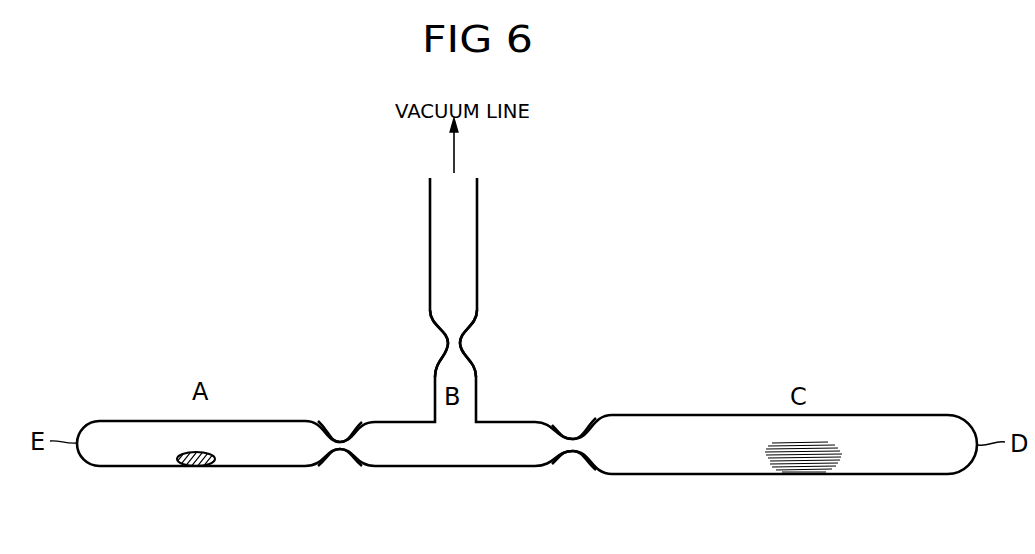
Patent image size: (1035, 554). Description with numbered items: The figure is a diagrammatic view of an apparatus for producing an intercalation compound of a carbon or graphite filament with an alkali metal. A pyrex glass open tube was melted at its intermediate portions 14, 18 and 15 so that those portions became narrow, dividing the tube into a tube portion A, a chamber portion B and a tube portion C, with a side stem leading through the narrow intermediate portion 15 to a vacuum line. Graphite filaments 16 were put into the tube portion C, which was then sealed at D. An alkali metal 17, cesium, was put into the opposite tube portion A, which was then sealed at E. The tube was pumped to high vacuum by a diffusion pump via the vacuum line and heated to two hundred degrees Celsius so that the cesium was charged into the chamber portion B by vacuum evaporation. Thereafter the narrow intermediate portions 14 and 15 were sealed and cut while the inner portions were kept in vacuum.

The intermediate portion 14 is at (342, 452).
The intermediate portion 15 is at (447, 348).
The graphite filaments 16 is at (768, 462).
The alkali metal 17 is at (200, 468).
The intermediate portion 18 is at (575, 452).